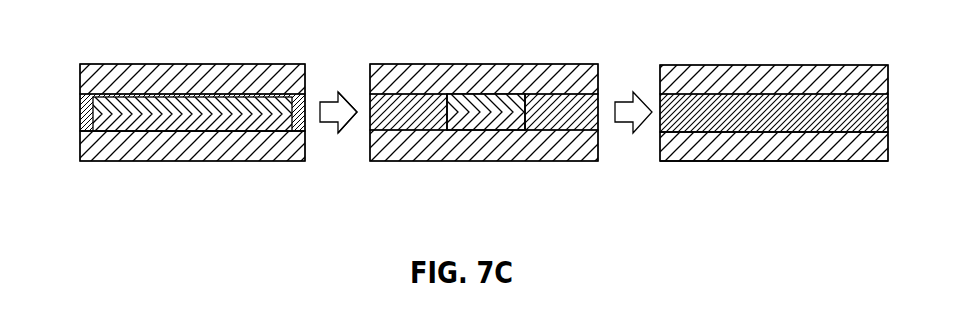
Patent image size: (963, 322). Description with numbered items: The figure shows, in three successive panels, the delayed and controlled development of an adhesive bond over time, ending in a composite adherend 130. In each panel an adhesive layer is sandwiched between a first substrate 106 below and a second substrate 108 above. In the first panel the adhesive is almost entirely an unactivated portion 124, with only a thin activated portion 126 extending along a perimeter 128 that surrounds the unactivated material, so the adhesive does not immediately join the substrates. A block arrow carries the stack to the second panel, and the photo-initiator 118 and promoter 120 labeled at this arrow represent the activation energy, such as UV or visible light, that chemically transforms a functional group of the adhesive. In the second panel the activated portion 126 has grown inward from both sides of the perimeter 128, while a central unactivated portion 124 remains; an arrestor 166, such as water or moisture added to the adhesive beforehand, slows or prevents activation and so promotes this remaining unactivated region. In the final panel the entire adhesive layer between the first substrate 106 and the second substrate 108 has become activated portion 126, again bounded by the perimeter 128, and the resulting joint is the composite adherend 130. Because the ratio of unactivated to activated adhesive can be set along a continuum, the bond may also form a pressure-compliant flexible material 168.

The first substrate 106 is at (132, 162).
The second substrate 108 is at (80, 77).
The photo-initiator 118 is at (353, 100).
The promoter 120 is at (330, 101).
The unactivated portion 124 is at (80, 109).
The activated portion 126 is at (80, 142).
The perimeter 128 is at (308, 132).
The composite adherend 130 is at (827, 175).
The arrestor 166 is at (511, 102).
The flexible material 168 is at (798, 185).